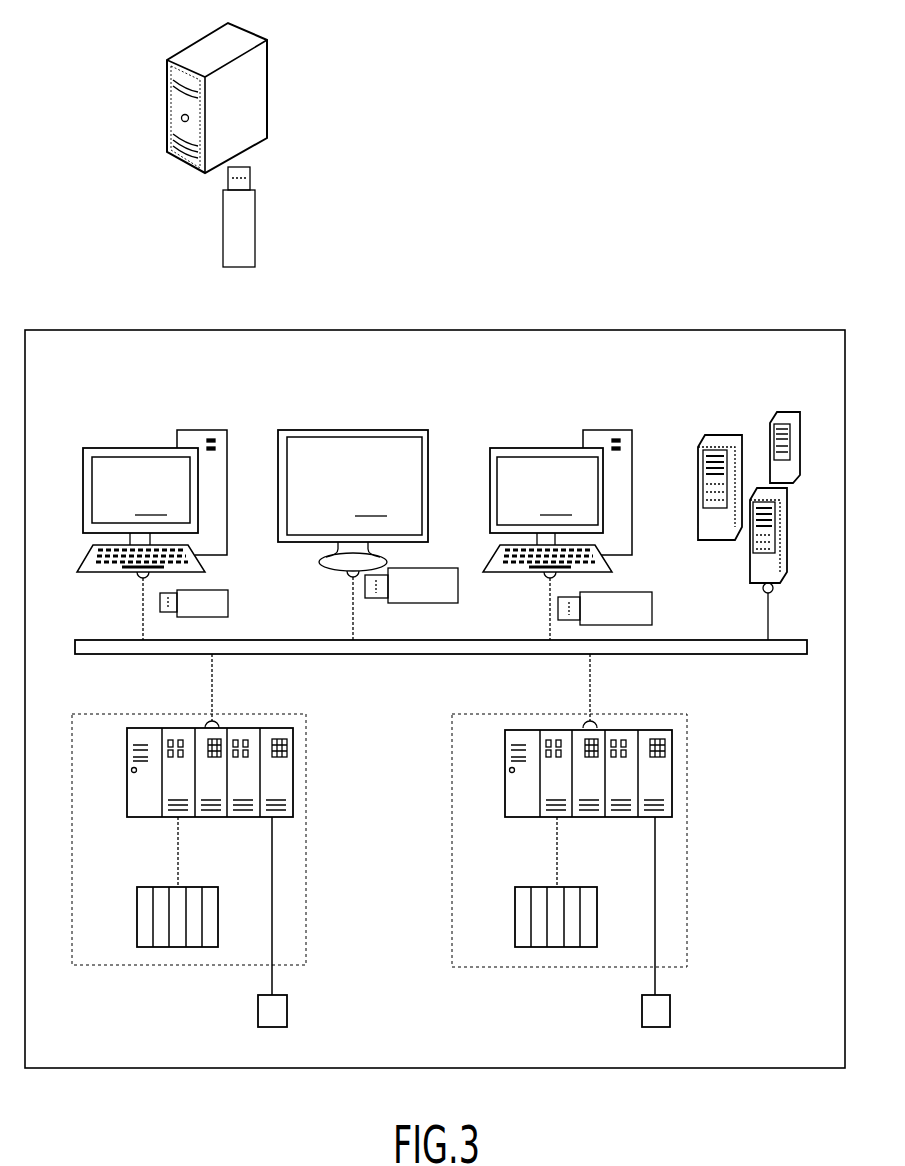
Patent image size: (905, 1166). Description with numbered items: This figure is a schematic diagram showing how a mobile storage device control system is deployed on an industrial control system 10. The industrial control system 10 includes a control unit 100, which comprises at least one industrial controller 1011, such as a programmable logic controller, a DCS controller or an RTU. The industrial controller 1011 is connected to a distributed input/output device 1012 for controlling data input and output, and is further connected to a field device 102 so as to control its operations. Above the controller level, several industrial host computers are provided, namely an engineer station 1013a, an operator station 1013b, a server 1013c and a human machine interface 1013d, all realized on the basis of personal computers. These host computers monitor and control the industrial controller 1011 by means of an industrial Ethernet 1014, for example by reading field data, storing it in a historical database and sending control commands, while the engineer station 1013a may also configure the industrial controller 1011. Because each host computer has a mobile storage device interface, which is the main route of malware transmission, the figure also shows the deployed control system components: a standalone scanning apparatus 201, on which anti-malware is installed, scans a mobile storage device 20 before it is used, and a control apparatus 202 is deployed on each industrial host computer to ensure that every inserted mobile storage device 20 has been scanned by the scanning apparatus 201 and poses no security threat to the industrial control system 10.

The industrial control system 10 is at (757, 329).
The mobile storage device 20 is at (257, 223).
The control unit 100 is at (413, 810).
The field device 102 is at (287, 1012).
The scanning apparatus 201 is at (240, 35).
The control apparatus 202 is at (353, 504).
The industrial controller 1011 is at (295, 748).
The distributed input/output device 1012 is at (188, 887).
The engineer station 1013a is at (324, 521).
The operator station 1013b is at (495, 448).
The server 1013c is at (728, 431).
The human machine interface 1013d is at (365, 430).
The industrial Ethernet 1014 is at (400, 639).